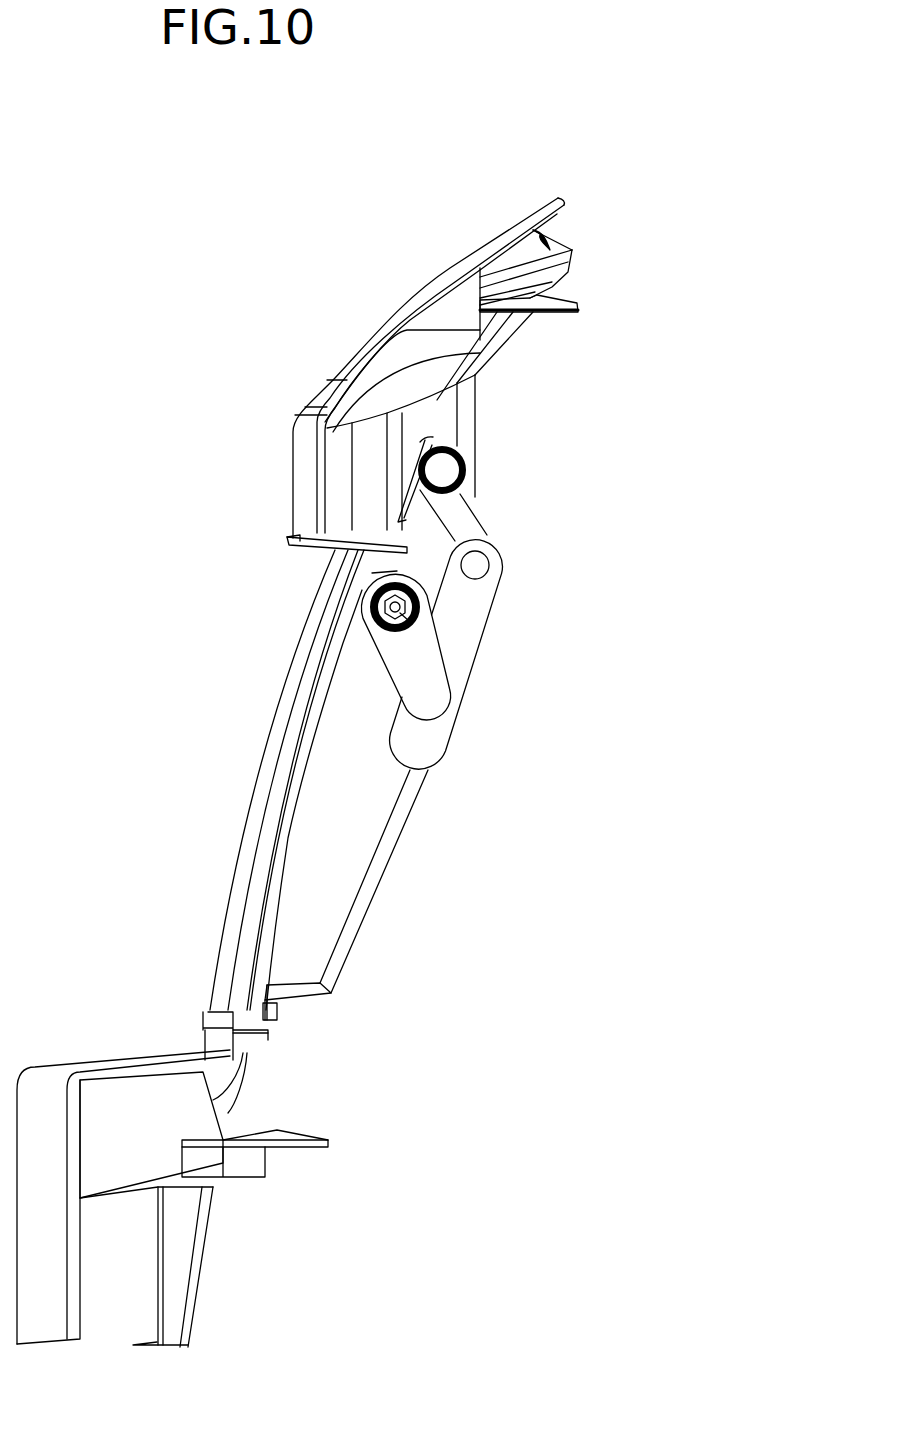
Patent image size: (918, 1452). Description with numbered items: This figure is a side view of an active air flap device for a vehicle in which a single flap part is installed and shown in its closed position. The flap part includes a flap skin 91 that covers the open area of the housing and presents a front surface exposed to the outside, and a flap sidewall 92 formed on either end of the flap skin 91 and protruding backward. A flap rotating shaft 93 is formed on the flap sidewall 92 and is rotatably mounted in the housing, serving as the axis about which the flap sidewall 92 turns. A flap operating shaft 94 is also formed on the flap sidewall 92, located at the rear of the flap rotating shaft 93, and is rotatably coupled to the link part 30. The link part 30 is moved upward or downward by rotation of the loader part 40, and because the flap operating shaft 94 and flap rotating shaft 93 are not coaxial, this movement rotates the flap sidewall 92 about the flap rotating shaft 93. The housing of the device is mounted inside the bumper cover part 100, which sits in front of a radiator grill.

The link part 30 is at (467, 607).
The loader part 40 is at (430, 665).
The flap skin 91 is at (277, 703).
The flap sidewall 92 is at (327, 817).
The flap rotating shaft 93 is at (440, 473).
The flap operating shaft 94 is at (474, 565).
The bumper cover part 100 is at (122, 1058).